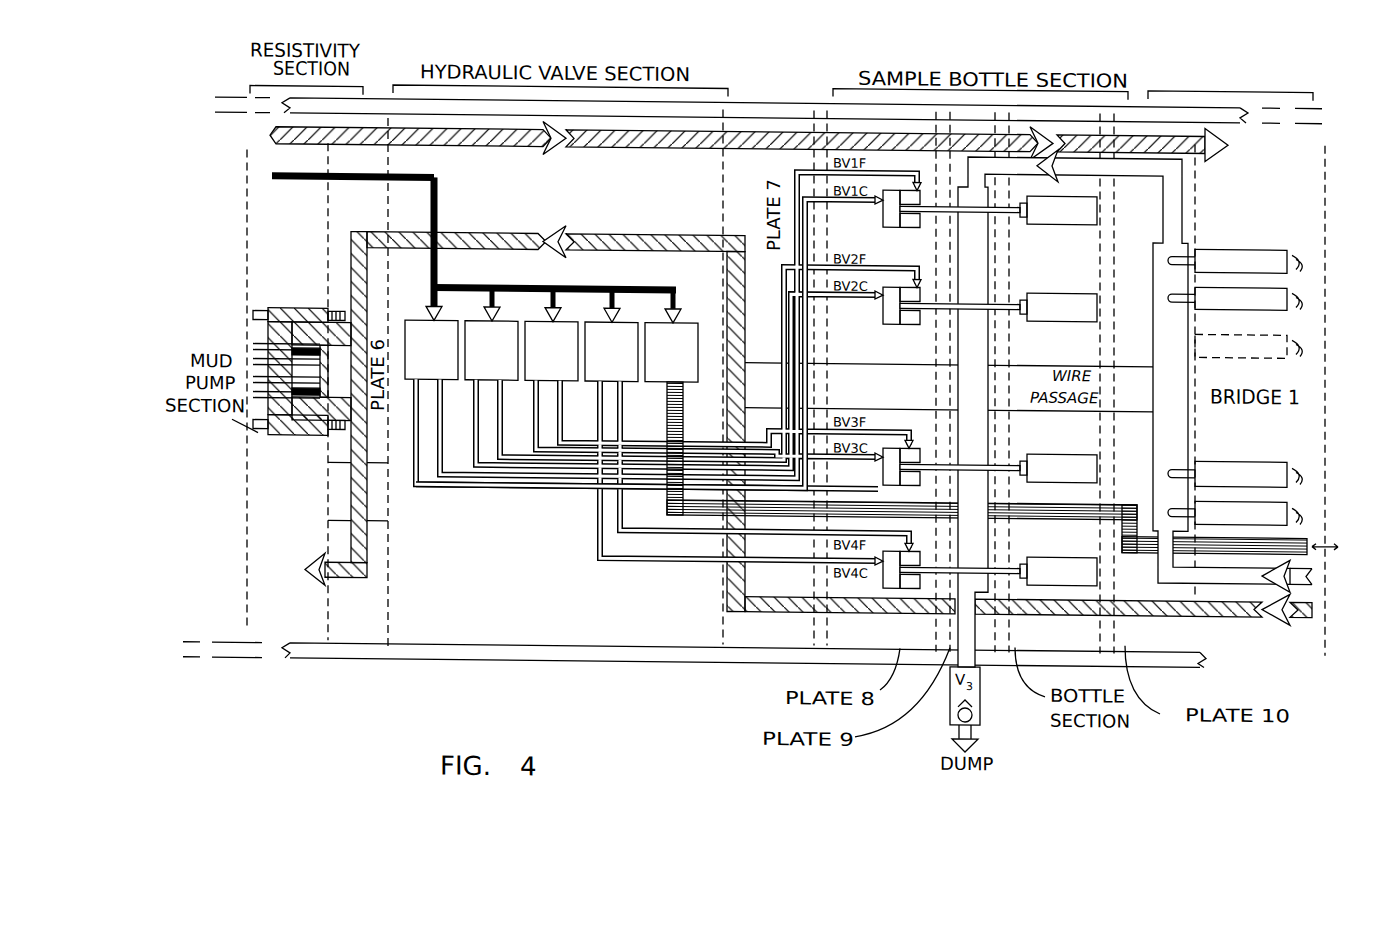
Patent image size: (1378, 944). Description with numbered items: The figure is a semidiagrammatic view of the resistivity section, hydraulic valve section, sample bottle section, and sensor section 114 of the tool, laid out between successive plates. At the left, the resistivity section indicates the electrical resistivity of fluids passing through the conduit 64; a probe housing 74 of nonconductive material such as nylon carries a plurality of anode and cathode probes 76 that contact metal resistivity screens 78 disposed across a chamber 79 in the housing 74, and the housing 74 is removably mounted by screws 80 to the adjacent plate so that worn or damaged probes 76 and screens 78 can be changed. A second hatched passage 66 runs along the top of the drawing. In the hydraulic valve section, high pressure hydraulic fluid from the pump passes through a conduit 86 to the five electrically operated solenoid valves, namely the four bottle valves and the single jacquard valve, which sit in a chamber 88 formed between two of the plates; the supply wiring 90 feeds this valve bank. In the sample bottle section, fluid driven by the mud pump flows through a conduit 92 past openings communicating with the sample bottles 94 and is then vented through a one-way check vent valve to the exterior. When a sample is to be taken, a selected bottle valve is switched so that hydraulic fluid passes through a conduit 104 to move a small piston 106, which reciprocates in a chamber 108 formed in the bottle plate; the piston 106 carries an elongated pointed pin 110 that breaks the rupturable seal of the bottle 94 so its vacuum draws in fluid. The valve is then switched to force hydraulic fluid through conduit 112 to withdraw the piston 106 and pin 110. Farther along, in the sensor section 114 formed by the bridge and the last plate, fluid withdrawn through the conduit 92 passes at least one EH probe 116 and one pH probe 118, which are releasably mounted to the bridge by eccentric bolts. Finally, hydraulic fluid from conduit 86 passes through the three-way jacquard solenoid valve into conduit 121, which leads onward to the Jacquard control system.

The conduit 64 is at (640, 236).
The sample fluid flow line 66 is at (280, 146).
The probe housing 74 is at (326, 310).
The anode and cathode probes 76 is at (245, 352).
The metal resistivity screens 78 is at (329, 367).
The chamber 79 is at (306, 437).
The screws 80 is at (257, 308).
The conduit 86 is at (440, 199).
The chamber 88 is at (602, 194).
The wire feed 90 is at (410, 303).
The conduit 92 is at (1184, 197).
The sample bottles 94 is at (1037, 218).
The conduit 104 is at (460, 493).
The piston 106 is at (879, 389).
The chamber 108 is at (882, 210).
The pin 110 is at (1002, 217).
The conduit 112 is at (538, 485).
The sensor section 114 is at (1259, 85).
The EH probe 116 is at (1258, 451).
The pH probe 118 is at (1258, 239).
The conduit 121 is at (703, 518).